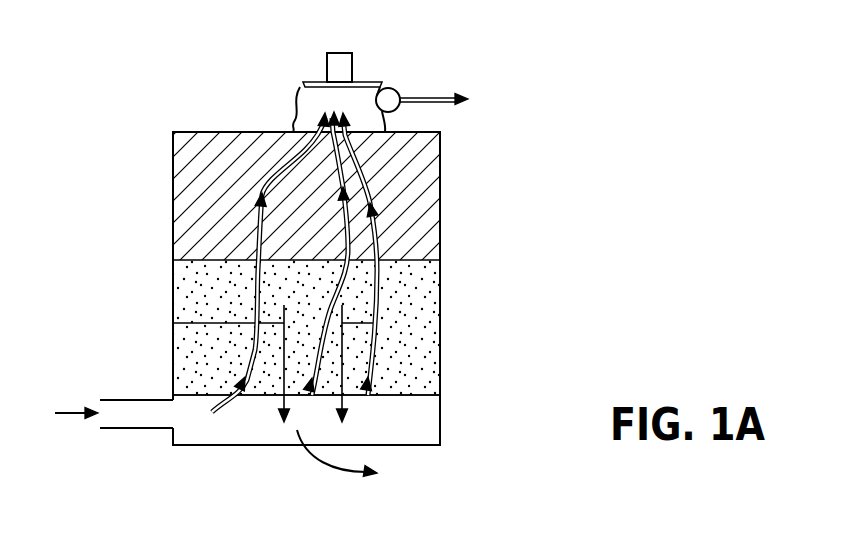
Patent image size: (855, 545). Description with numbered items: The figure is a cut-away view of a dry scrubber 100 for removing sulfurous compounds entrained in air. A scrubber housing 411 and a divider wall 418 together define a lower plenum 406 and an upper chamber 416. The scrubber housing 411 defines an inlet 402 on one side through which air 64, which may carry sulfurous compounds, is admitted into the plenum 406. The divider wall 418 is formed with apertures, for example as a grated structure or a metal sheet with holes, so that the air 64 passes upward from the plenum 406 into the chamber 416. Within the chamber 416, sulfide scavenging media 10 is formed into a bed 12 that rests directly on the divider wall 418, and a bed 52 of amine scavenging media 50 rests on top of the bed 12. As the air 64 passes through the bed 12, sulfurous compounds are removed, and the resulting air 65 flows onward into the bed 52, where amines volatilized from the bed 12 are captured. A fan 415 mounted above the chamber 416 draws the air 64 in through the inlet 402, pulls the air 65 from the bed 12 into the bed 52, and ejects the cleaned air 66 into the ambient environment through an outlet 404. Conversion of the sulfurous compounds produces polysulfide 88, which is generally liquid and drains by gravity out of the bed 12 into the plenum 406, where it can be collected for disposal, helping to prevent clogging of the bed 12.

The dry scrubber 100 is at (632, 56).
The sulfide scavenging media 10 is at (410, 320).
The bed of sulfide scavenging media 12 is at (183, 297).
The amine scavenging media 50 is at (428, 223).
The bed of amine scavenging media 52 is at (417, 170).
The air 64 is at (58, 415).
The air 65 is at (350, 230).
The air 66 is at (437, 90).
The polysulfide 88 is at (200, 323).
The inlet 402 is at (135, 413).
The outlet 404 is at (388, 86).
The plenum 406 is at (256, 435).
The scrubber housing 411 is at (173, 223).
The fan 415 is at (307, 97).
The chamber 416 is at (234, 210).
The divider wall 418 is at (407, 395).